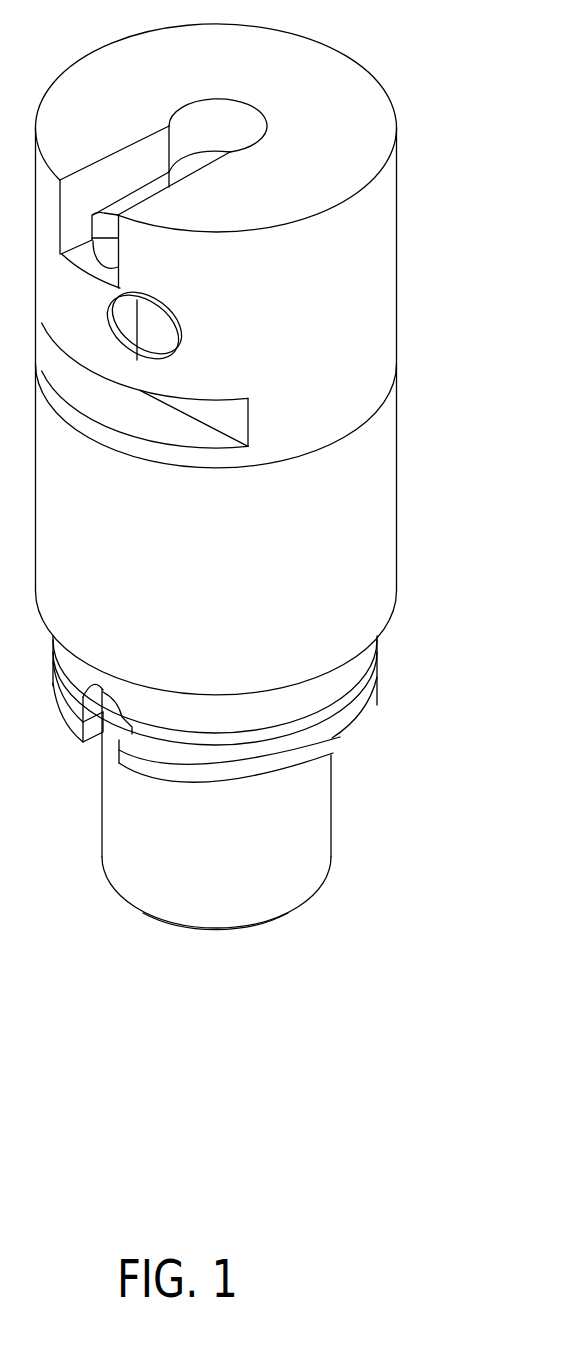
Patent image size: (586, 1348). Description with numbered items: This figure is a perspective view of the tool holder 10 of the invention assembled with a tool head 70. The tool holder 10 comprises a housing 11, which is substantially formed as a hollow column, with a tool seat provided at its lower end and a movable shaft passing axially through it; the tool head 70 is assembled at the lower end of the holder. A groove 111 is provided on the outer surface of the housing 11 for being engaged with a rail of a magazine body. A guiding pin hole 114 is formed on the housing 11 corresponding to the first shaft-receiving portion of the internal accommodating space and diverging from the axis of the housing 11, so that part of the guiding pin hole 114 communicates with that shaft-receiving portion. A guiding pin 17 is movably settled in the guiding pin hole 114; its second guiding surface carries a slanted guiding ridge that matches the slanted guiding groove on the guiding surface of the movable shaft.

The tool holder 10 is at (267, 470).
The housing 11 is at (375, 262).
The groove 111 is at (240, 420).
The guiding pin hole 114 is at (176, 310).
The guiding pin 17 is at (153, 342).
The tool head 70 is at (300, 820).